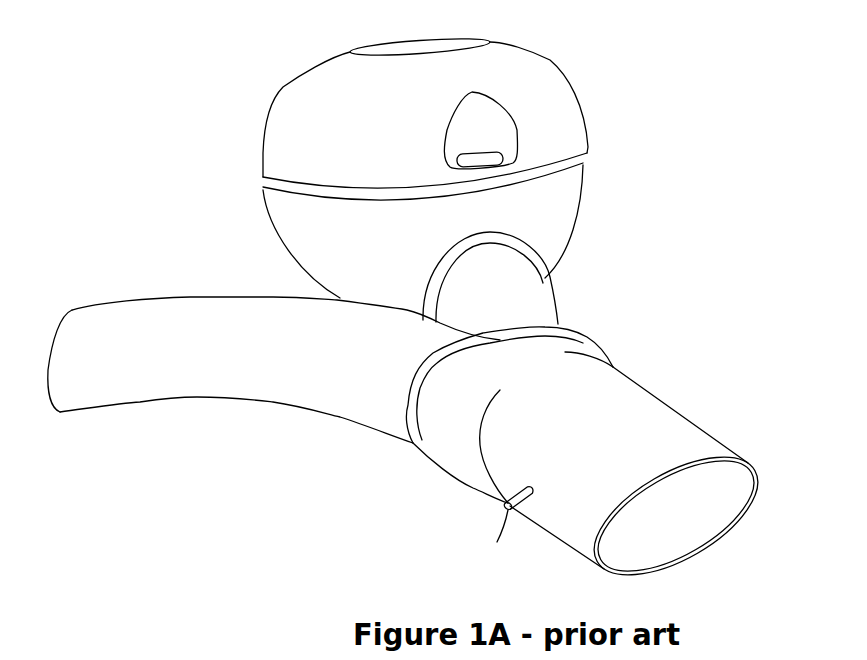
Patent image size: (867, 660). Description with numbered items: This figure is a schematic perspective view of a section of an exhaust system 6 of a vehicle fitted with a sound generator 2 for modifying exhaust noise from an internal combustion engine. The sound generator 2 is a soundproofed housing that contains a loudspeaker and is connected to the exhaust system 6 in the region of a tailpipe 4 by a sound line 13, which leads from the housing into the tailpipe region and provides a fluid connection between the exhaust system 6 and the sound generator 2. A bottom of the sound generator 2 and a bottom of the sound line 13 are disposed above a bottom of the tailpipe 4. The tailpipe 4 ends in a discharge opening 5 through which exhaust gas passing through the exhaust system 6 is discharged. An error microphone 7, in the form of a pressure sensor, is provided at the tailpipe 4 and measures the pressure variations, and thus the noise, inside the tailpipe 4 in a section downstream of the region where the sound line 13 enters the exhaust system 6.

The sound generator 2 is at (535, 75).
The sound line 13 is at (540, 298).
The exhaust system 6 is at (333, 400).
The tailpipe 4 is at (613, 443).
The discharge opening 5 is at (663, 515).
The error microphone 7 is at (513, 510).